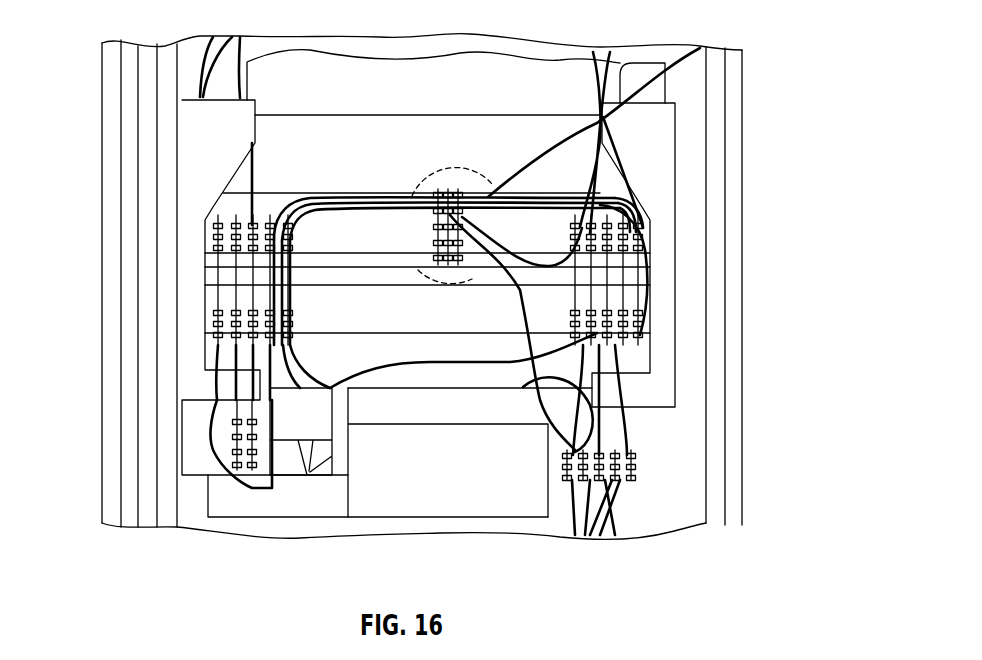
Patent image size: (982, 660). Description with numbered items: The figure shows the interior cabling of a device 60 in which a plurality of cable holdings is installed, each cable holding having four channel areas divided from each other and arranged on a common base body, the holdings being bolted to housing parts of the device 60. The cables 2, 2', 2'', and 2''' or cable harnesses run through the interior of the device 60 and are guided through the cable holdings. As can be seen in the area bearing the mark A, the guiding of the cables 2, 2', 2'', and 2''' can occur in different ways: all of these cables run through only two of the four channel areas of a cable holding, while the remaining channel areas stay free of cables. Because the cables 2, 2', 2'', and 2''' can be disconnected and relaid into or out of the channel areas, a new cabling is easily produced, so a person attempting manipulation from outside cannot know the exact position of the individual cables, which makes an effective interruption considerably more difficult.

The cable 2 is at (512, 332).
The cable 2' is at (522, 238).
The cable 2'' is at (591, 122).
The cable 2''' is at (570, 142).
The device 60 is at (478, 90).
The area bearing the mark A is at (407, 260).